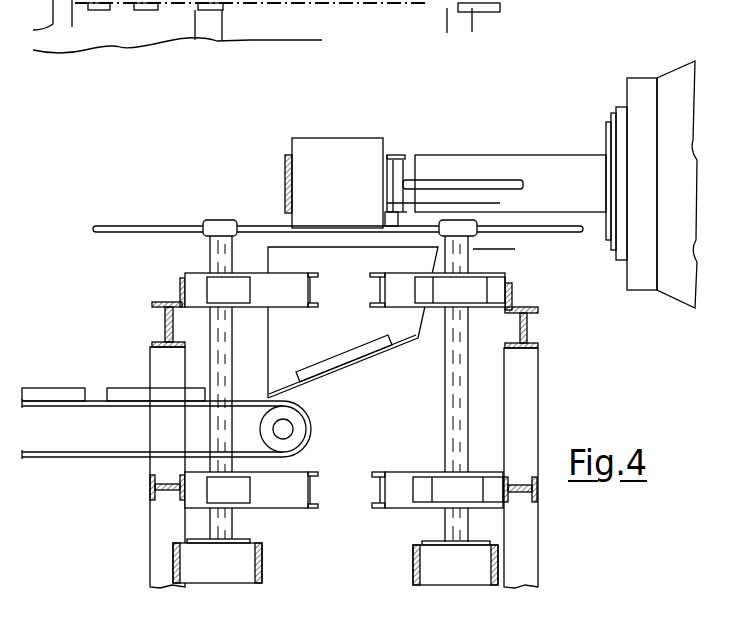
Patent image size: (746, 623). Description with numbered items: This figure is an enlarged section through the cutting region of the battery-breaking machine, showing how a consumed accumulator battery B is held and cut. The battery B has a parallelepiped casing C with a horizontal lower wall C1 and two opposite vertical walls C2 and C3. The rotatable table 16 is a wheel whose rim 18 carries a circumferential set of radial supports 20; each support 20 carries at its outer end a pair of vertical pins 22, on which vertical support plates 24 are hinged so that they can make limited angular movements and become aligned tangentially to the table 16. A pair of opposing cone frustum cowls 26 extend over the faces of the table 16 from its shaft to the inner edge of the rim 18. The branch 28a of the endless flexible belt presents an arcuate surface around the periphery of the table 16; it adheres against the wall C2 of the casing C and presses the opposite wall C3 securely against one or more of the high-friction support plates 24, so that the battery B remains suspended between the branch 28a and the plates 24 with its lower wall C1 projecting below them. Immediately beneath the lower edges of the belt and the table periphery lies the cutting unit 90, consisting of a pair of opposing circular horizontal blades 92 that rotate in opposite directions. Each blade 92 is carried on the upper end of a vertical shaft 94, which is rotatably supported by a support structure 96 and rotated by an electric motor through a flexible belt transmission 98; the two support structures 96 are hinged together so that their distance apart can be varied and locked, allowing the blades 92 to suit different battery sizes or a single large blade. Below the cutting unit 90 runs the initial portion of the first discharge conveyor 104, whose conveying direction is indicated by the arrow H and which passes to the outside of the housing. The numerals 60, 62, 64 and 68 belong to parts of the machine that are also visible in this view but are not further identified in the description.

The rotatable table 16 is at (666, 66).
The rim 18 is at (635, 78).
The radial supports 20 is at (522, 155).
The vertical pins 22 is at (407, 170).
The vertical support plate 24 is at (388, 155).
The cone frustum cowls 26 is at (685, 62).
The branch of the endless belt 28a is at (285, 168).
The roller 60 is at (90, 10).
The guide 62 is at (125, 9).
The roller 64 is at (152, 7).
The bearing 68 is at (263, 0).
The cutting unit 90 is at (304, 353).
The circular horizontal blades 92 is at (107, 226).
The vertical shaft 94 is at (225, 344).
The support structure 96 is at (155, 352).
The flexible belt transmission 98 is at (262, 563).
The first discharge conveyor 104 is at (88, 458).
The accumulator battery B is at (344, 130).
The casing C is at (308, 130).
The horizontal lower wall C1 is at (347, 238).
The vertical wall C2 is at (289, 140).
The vertical wall C3 is at (393, 228).
The conveying direction arrow H is at (63, 378).